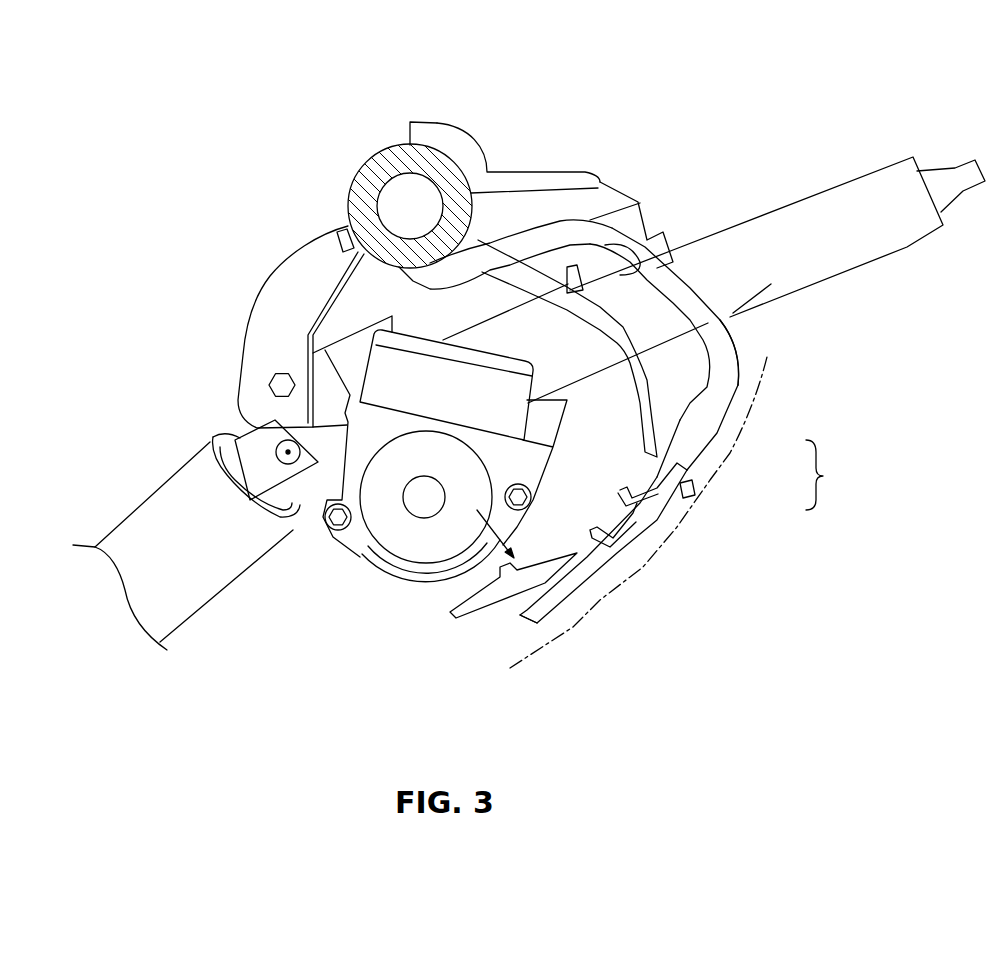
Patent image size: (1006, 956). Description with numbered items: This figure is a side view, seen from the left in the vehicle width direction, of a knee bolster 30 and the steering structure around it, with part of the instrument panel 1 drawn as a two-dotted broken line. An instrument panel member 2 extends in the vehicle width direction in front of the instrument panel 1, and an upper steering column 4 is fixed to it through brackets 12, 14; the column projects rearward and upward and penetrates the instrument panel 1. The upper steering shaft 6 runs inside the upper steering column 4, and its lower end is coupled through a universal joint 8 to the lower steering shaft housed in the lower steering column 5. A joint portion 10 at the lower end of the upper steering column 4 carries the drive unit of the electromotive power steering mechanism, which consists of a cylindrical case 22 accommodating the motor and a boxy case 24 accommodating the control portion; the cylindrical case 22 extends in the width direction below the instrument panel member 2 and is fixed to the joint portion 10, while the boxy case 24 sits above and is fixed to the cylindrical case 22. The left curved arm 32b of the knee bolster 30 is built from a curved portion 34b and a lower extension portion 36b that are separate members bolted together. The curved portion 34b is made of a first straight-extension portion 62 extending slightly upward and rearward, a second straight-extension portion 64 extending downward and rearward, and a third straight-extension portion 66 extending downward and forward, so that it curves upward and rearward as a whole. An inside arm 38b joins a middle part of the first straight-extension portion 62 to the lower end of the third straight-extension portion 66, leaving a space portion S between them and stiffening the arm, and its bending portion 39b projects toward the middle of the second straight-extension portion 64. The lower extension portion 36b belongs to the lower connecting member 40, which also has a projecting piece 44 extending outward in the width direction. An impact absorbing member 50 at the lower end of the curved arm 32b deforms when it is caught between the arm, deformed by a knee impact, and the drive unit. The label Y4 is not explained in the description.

The instrument panel 1 is at (663, 552).
The instrument panel member 2 is at (367, 165).
The upper steering column 4 is at (837, 200).
The lower steering column 5 is at (143, 523).
The upper steering shaft 6 is at (963, 170).
The universal joint 8 is at (247, 433).
The joint portion 10 is at (392, 320).
The bracket 12 is at (600, 182).
The bracket 14 is at (277, 287).
The cylindrical case 22 is at (360, 547).
The boxy case 24 is at (500, 352).
The knee bolster 30 is at (760, 338).
The curved arm 32b is at (838, 475).
The curved portion 34b is at (722, 435).
The lower extension portion 36b is at (660, 523).
The inside arm 38b is at (647, 403).
The bending portion 39b is at (676, 322).
The lower connecting member 40 is at (393, 598).
The projecting piece 44 is at (632, 530).
The impact absorbing member 50 is at (480, 600).
The first straight-extension portion 62 is at (525, 238).
The second straight-extension portion 64 is at (667, 278).
The third straight-extension portion 66 is at (723, 393).
The space portion S is at (760, 290).
The axis Y4 is at (482, 522).